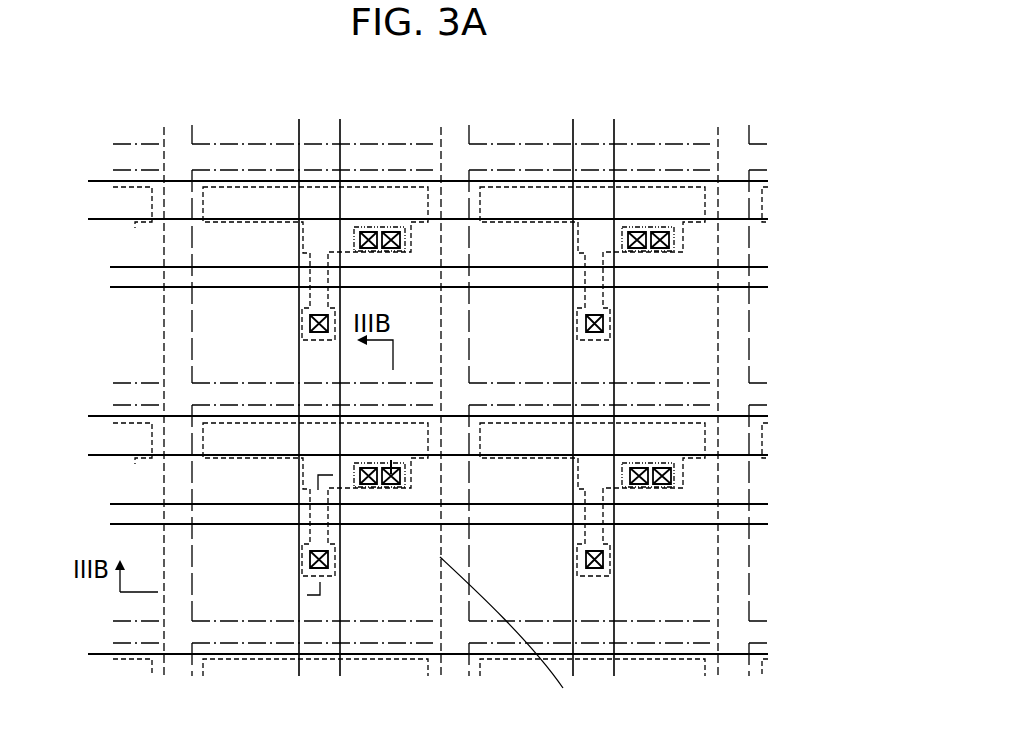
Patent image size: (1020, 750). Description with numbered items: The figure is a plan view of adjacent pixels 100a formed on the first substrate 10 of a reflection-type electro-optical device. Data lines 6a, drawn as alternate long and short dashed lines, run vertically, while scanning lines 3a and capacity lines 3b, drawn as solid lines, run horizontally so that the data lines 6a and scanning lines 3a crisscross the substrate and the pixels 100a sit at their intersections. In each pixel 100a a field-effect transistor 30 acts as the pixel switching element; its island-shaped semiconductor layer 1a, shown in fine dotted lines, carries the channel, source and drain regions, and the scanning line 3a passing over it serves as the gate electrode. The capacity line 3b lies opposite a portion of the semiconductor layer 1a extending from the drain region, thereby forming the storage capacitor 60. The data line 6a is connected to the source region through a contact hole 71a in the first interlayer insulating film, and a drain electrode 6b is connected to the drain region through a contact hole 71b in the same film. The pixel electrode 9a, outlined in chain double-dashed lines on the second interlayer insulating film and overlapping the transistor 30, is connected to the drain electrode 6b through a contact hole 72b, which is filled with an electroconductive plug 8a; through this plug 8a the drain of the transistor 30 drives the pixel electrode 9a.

The first substrate 10 is at (690, 115).
The pixel 100a is at (253, 594).
The field-effect transistor 30 is at (388, 571).
The scanning line 3a is at (108, 265).
The capacity line 3b is at (85, 177).
The data line 6a is at (342, 113).
The storage capacitor 60 is at (255, 420).
The drain electrode 6b is at (407, 478).
The plug 8a is at (392, 466).
The contact hole 71a is at (331, 562).
The contact hole 71b is at (367, 486).
The contact hole 72b is at (396, 487).
The semiconductor layer 1a is at (303, 535).
The pixel electrode 9a is at (512, 635).